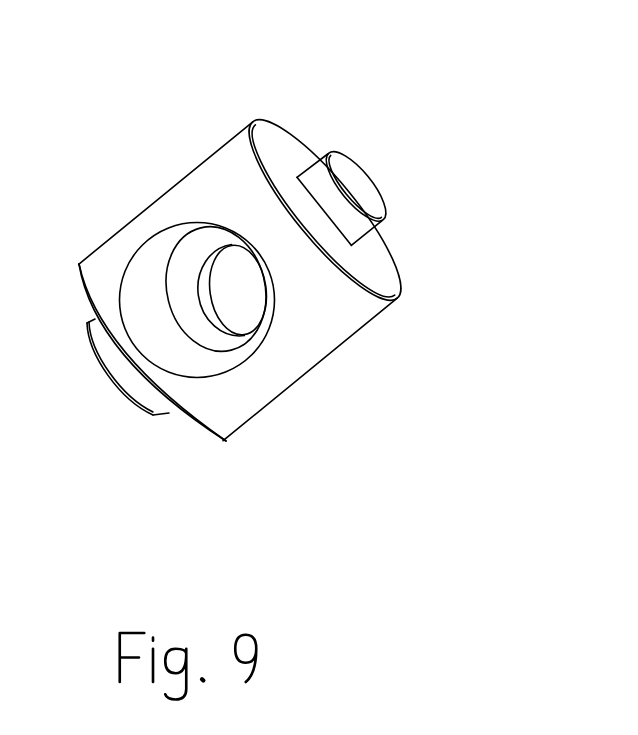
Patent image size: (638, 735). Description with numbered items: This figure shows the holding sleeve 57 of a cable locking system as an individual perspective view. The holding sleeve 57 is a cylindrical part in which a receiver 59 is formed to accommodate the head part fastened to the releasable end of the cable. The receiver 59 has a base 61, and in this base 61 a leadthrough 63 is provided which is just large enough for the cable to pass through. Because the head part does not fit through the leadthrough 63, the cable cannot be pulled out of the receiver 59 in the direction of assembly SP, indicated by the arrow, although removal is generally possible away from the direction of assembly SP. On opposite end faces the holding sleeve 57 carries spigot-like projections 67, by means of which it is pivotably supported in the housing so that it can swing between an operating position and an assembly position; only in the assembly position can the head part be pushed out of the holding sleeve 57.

The holding sleeve 57 is at (217, 188).
The receiver 59 is at (152, 273).
The base 61 is at (230, 342).
The leadthrough 63 is at (348, 438).
The spigot-like projections 67 is at (350, 183).
The direction of assembly SP is at (266, 16).